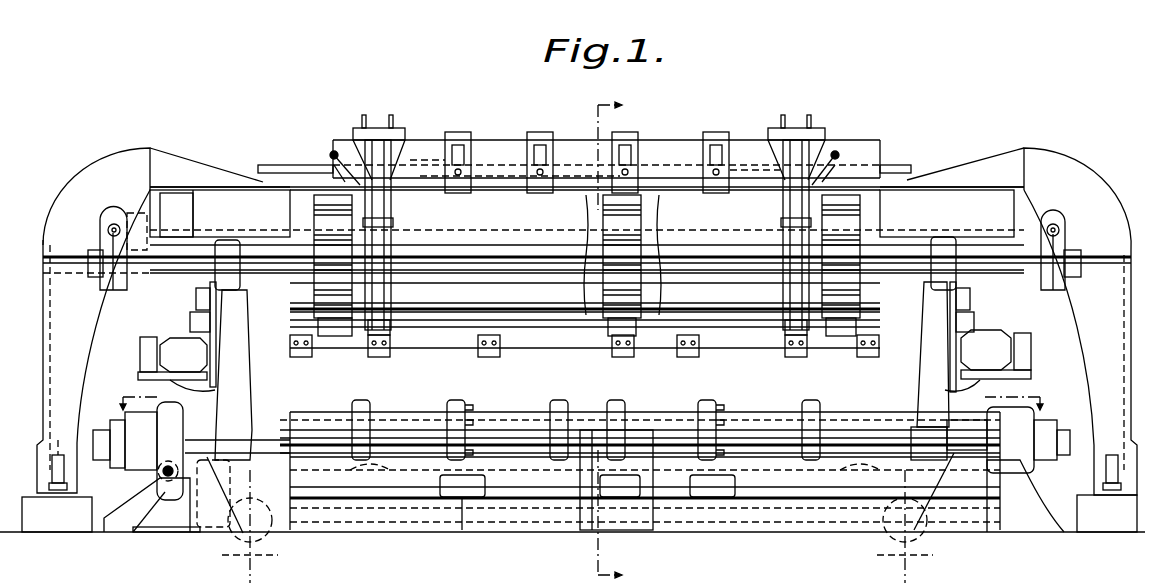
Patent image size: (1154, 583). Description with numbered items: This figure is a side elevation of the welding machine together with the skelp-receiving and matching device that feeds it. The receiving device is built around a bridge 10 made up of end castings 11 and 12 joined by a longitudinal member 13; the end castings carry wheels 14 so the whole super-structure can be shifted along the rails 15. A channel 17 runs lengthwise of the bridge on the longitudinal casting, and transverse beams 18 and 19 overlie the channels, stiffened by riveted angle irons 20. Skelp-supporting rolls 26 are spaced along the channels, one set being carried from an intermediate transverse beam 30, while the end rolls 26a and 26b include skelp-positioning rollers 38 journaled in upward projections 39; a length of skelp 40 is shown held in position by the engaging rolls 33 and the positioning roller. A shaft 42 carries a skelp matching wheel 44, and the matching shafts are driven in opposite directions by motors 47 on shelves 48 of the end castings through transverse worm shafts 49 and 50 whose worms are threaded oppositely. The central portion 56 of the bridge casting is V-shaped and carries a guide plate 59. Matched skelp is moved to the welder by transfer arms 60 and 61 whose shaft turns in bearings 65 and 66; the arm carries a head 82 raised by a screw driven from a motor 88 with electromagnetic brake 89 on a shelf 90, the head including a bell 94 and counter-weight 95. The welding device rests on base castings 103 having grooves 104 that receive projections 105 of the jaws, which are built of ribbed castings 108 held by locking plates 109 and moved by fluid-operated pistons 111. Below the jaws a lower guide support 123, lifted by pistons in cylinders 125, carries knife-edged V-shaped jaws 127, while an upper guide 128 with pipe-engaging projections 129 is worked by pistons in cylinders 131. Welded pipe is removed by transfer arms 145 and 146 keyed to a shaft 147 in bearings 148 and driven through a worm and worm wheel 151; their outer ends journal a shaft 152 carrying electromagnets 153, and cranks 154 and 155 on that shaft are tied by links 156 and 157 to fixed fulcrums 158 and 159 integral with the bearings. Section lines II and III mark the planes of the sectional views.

The bridge 10 is at (232, 192).
The end casting 11 is at (58, 332).
The end casting 12 is at (1080, 182).
The longitudinal member 13 is at (197, 165).
The wheels 14 is at (50, 478).
The rails 15 is at (66, 490).
The channel 17 is at (568, 140).
The transverse beam 18 is at (379, 221).
The transverse beam 19 is at (796, 219).
The angle irons 20 is at (366, 116).
The skelp-supporting rolls 26 is at (472, 150).
The skelp-supporting roll 26a is at (423, 151).
The skelp-supporting roll 26b is at (754, 156).
The intermediate transverse beam 30 is at (455, 132).
The engaging rolls 33 is at (530, 167).
The skelp-positioning rollers 38 is at (587, 152).
The projections 39 is at (345, 150).
The length of skelp 40 is at (280, 165).
The shaft 42 is at (162, 250).
The skelp matching wheel 44 is at (314, 214).
The motors 47 is at (112, 212).
The shelves 48 is at (88, 257).
The transverse worm shaft 49 is at (108, 230).
The transverse worm shaft 50 is at (1059, 230).
The central portion 56 is at (497, 206).
The guide plate 59 is at (536, 250).
The transfer arm 60 is at (230, 347).
The transfer arm 61 is at (932, 348).
The bearing 65 is at (130, 480).
The bearing 66 is at (1030, 470).
The head 82 is at (226, 240).
The motor 88 is at (160, 352).
The electromagnetic brake 89 is at (140, 352).
The shelf 90 is at (160, 385).
The bell 94 is at (237, 332).
The counter-weight 95 is at (190, 315).
The base castings 103 is at (418, 520).
The grooves 104 is at (528, 508).
The projections 105 is at (485, 490).
The ribbed castings 108 is at (505, 418).
The locking plates 109 is at (462, 498).
The fluid-operated pistons 111 is at (440, 487).
The lower guide support 123 is at (745, 455).
The cylinders 125 is at (275, 545).
The V-shaped jaws 127 is at (405, 455).
The upper guide 128 is at (452, 340).
The pipe-engaging projections 129 is at (368, 350).
The cylinders 131 is at (380, 300).
The transfer arm 145 is at (240, 388).
The transfer arm 146 is at (928, 383).
The shaft 147 is at (375, 435).
The bearings 148 is at (576, 491).
The worm and worm wheel 151 is at (160, 470).
The shaft 152 is at (468, 320).
The electromagnets 153 is at (318, 325).
The crank 154 is at (210, 290).
The crank 155 is at (965, 295).
The link 156 is at (195, 334).
The link 157 is at (970, 328).
The fixed fulcrum 158 is at (250, 390).
The fixed fulcrum 159 is at (910, 392).
The section line II is at (627, 341).
The section line III is at (577, 396).